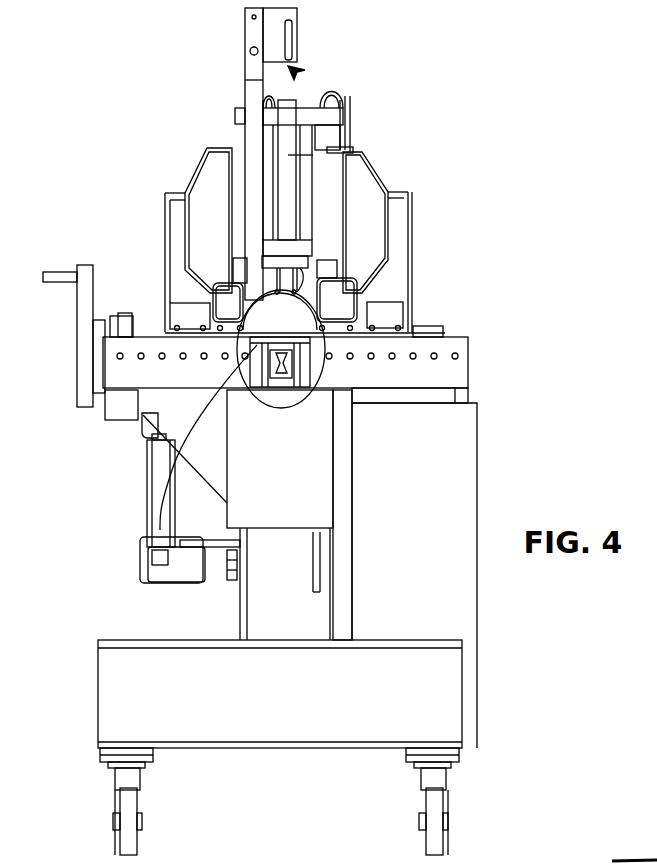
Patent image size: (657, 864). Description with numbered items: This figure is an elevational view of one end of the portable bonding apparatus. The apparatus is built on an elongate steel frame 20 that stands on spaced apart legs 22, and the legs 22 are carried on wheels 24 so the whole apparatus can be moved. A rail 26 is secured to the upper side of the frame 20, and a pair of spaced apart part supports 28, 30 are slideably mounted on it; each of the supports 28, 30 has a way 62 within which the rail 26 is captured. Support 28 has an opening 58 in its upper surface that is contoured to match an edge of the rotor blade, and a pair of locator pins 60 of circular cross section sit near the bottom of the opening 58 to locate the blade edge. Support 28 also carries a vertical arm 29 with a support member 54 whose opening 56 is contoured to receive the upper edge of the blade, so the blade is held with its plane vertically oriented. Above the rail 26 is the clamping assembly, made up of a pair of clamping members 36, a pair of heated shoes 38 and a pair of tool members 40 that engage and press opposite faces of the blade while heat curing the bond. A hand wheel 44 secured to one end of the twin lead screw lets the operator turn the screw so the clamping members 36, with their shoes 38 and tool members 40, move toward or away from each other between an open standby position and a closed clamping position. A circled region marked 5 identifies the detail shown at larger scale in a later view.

The frame 20 is at (247, 487).
The legs 22 is at (262, 608).
The wheels 24 is at (140, 805).
The rail 26 is at (283, 378).
The part support 28 is at (250, 41).
The vertical arm 29 is at (246, 69).
The part support 30 is at (253, 289).
The clamping members 36 is at (214, 181).
The heated shoes 38 is at (330, 167).
The tool members 40 is at (287, 182).
The hand wheel 44 is at (86, 297).
The support member 54 is at (290, 32).
The opening 56 is at (296, 75).
The opening 58 is at (255, 270).
The locator pins 60 is at (588, 862).
The way 62 is at (175, 460).
The detail view circle of FIG. 5 is at (281, 408).